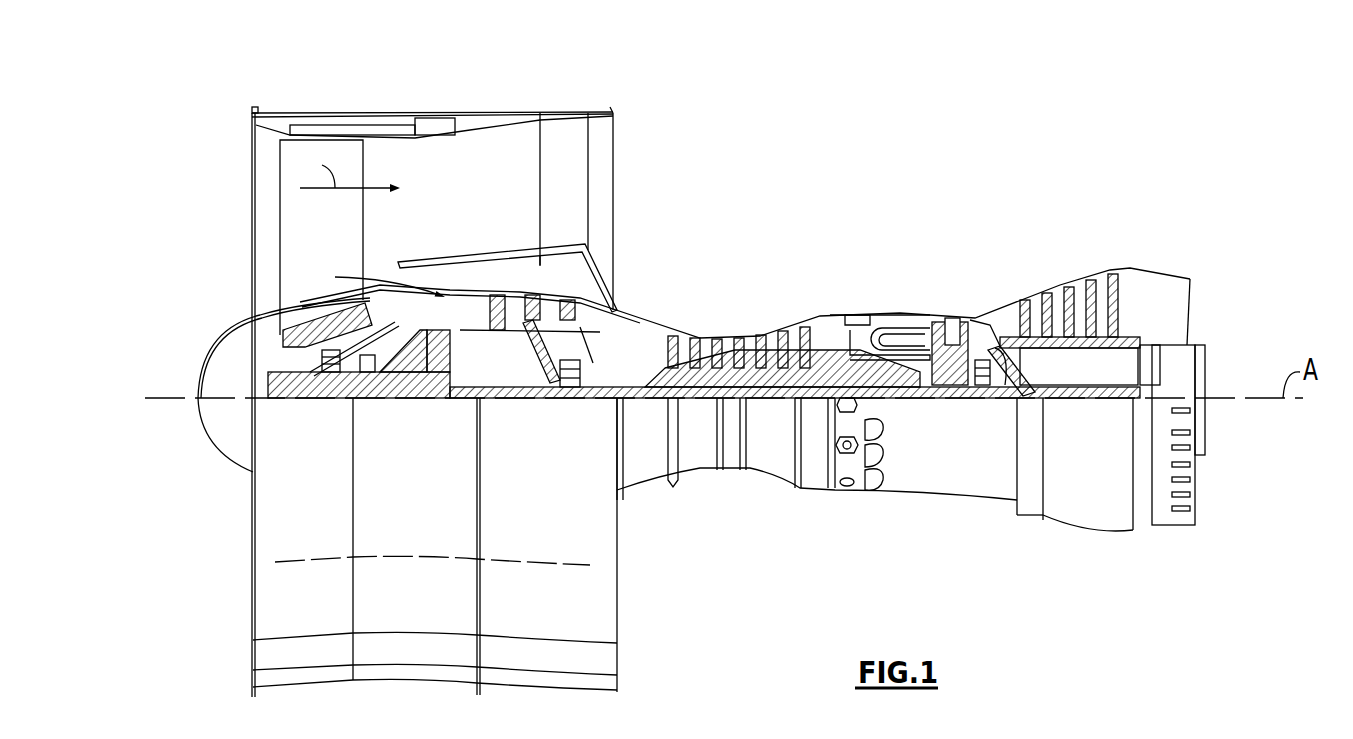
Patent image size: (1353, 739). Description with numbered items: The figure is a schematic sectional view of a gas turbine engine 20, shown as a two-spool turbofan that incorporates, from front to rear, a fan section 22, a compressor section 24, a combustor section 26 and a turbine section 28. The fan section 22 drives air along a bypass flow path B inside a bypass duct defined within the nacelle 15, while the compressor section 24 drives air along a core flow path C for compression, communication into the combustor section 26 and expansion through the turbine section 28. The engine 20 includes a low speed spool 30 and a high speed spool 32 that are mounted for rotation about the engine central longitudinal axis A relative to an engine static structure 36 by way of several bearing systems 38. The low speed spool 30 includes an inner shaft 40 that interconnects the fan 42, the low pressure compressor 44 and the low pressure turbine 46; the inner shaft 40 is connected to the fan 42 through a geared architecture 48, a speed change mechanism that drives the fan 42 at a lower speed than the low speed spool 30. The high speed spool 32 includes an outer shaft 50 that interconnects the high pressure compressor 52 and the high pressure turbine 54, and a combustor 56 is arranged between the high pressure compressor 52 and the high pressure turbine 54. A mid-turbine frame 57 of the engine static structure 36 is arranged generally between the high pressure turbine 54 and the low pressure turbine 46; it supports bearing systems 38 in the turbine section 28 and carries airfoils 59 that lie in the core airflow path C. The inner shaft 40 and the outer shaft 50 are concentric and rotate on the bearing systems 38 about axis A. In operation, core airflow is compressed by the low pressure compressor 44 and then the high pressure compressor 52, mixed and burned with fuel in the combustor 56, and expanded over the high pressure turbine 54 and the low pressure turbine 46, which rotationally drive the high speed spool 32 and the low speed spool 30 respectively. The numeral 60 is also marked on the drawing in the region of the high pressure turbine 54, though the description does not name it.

The nacelle 15 is at (432, 118).
The gas turbine engine 20 is at (893, 167).
The fan section 22 is at (365, 103).
The compressor section 24 is at (665, 307).
The combustor section 26 is at (888, 293).
The turbine section 28 is at (1037, 257).
The low speed spool 30 is at (773, 400).
The high speed spool 32 is at (813, 330).
The engine static structure 36 is at (813, 487).
The bearing systems 38 is at (575, 378).
The inner shaft 40 is at (645, 398).
The fan 42 is at (335, 244).
The low pressure compressor 44 is at (540, 310).
The low pressure turbine 46 is at (1080, 287).
The geared architecture 48 is at (442, 378).
The outer shaft 50 is at (902, 400).
The high pressure compressor 52 is at (743, 367).
The high pressure turbine 54 is at (956, 321).
The combustor 56 is at (883, 337).
The mid-turbine frame 57 is at (997, 303).
The airfoils 59 is at (1020, 367).
The core airflow path 60 is at (920, 317).